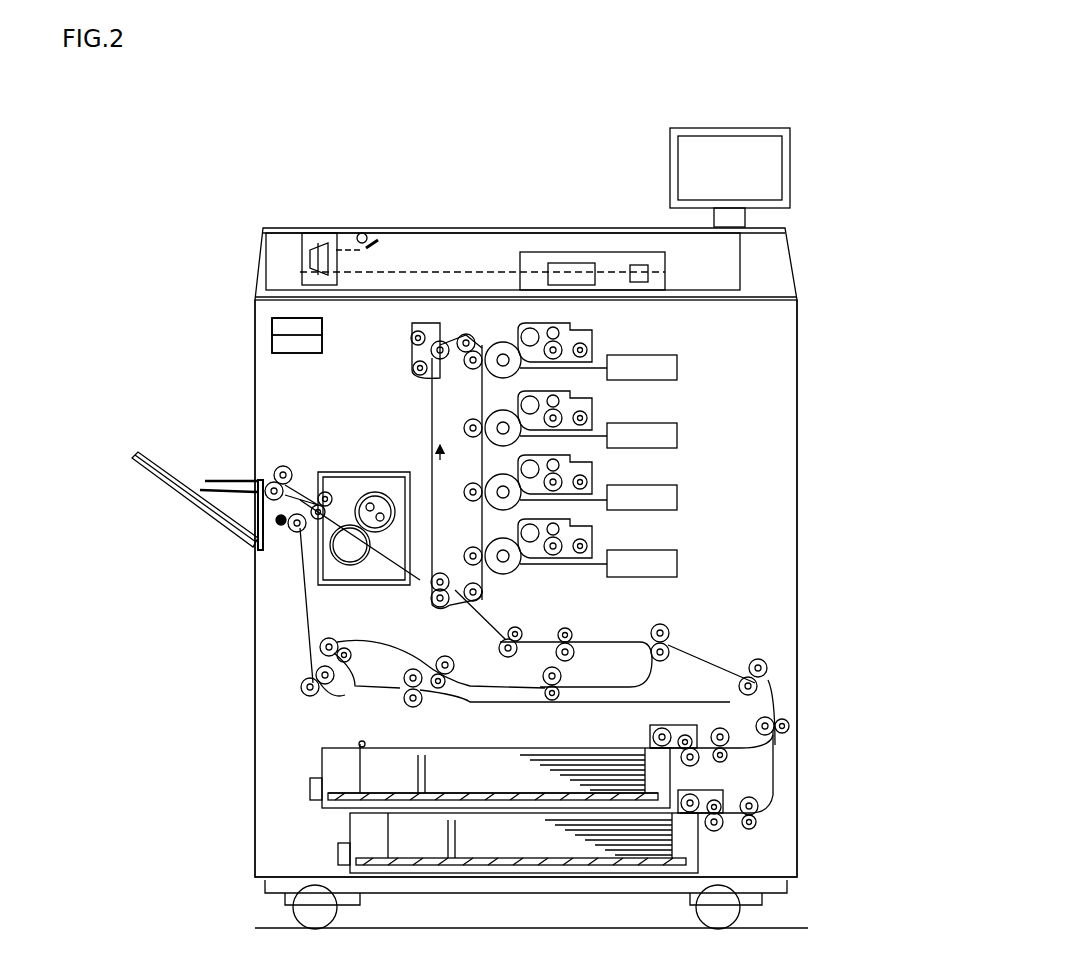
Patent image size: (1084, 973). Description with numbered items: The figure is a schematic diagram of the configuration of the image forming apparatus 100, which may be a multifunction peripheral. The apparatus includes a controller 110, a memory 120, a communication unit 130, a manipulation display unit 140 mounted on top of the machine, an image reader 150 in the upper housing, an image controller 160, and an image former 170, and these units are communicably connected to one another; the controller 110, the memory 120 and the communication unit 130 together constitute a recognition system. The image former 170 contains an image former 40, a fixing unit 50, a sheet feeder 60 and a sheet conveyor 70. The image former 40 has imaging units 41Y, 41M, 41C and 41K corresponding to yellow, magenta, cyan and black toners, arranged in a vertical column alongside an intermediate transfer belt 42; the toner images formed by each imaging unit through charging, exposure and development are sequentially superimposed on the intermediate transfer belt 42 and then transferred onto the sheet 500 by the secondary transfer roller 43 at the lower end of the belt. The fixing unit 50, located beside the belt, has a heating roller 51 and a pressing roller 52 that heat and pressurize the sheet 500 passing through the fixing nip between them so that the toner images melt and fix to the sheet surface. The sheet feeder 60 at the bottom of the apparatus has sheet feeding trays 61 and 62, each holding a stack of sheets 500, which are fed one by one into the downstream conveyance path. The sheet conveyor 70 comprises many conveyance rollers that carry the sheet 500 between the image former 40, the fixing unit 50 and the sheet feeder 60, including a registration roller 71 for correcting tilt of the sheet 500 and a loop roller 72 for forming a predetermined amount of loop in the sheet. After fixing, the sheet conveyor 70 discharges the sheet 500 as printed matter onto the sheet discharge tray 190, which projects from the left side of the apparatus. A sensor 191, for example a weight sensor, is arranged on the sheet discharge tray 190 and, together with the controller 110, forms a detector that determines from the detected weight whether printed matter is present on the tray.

The image forming apparatus 100 is at (228, 134).
The manipulation display unit 140 is at (790, 172).
The image reader 150 is at (715, 270).
The controller 110 is at (272, 327).
The memory 120 is at (297, 335).
The communication unit 130 is at (297, 335).
The image controller 160 is at (272, 345).
The image former 170 is at (345, 403).
The image former 40 is at (420, 474).
The intermediate transfer belt 42 is at (430, 418).
The secondary transfer roller 43 is at (437, 602).
The imaging unit 41Y is at (622, 335).
The imaging unit 41M is at (622, 403).
The imaging unit 41C is at (622, 470).
The imaging unit 41K is at (622, 533).
The fixing unit 50 is at (357, 525).
The heating roller 51 is at (378, 492).
The pressing roller 52 is at (350, 566).
The sheet discharge tray 190 is at (140, 470).
The sensor 191 is at (210, 506).
The sheet conveyor 70 is at (545, 698).
The registration roller 71 is at (517, 630).
The loop roller 72 is at (571, 632).
The sheet feeder 60 is at (463, 790).
The sheet feeding tray 61 is at (472, 758).
The sheet feeding tray 62 is at (350, 832).
The sheet 500 is at (600, 760).